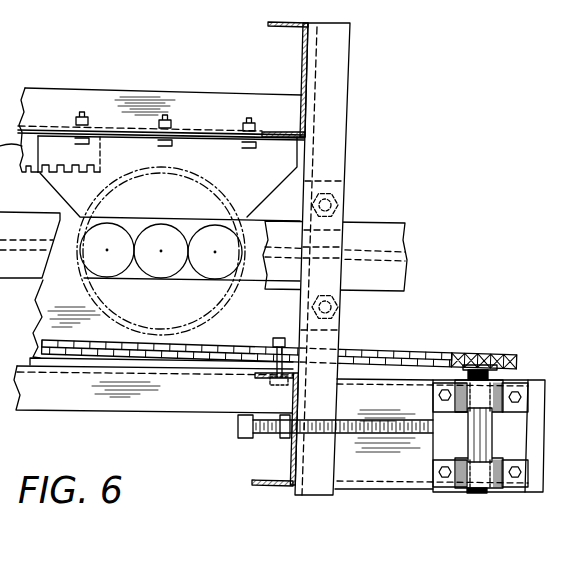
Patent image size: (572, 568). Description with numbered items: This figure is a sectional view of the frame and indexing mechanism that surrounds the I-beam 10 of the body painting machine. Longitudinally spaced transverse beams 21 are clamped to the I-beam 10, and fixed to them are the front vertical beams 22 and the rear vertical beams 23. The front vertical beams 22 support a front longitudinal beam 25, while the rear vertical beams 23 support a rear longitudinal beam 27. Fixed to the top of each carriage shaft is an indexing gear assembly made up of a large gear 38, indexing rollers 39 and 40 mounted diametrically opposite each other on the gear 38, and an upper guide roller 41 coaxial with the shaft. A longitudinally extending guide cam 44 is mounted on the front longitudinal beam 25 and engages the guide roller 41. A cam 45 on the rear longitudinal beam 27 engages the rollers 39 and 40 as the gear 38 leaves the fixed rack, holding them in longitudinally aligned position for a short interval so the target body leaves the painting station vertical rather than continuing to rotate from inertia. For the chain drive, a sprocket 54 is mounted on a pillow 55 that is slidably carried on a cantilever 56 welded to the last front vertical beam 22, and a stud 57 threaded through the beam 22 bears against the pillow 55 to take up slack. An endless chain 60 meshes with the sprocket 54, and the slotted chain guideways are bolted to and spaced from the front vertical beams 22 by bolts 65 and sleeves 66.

The I-beam 10 is at (35, 277).
The transverse beam 21 is at (347, 65).
The front vertical beam 22 is at (280, 486).
The rear vertical beam 23 is at (280, 22).
The front longitudinal beam 25 is at (115, 405).
The rear longitudinal beam 27 is at (185, 95).
The large gear 38 is at (257, 192).
The indexing roller 39 is at (125, 268).
The indexing roller 40 is at (222, 279).
The upper guide roller 41 is at (168, 268).
The guide cam 44 is at (43, 331).
The cam 45 is at (63, 183).
The sprocket 54 is at (502, 353).
The pillow 55 is at (433, 450).
The cantilever 56 is at (410, 483).
The stud 57 is at (412, 423).
The endless chain 60 is at (365, 352).
The bolt 65 is at (280, 338).
The sleeve 66 is at (261, 372).